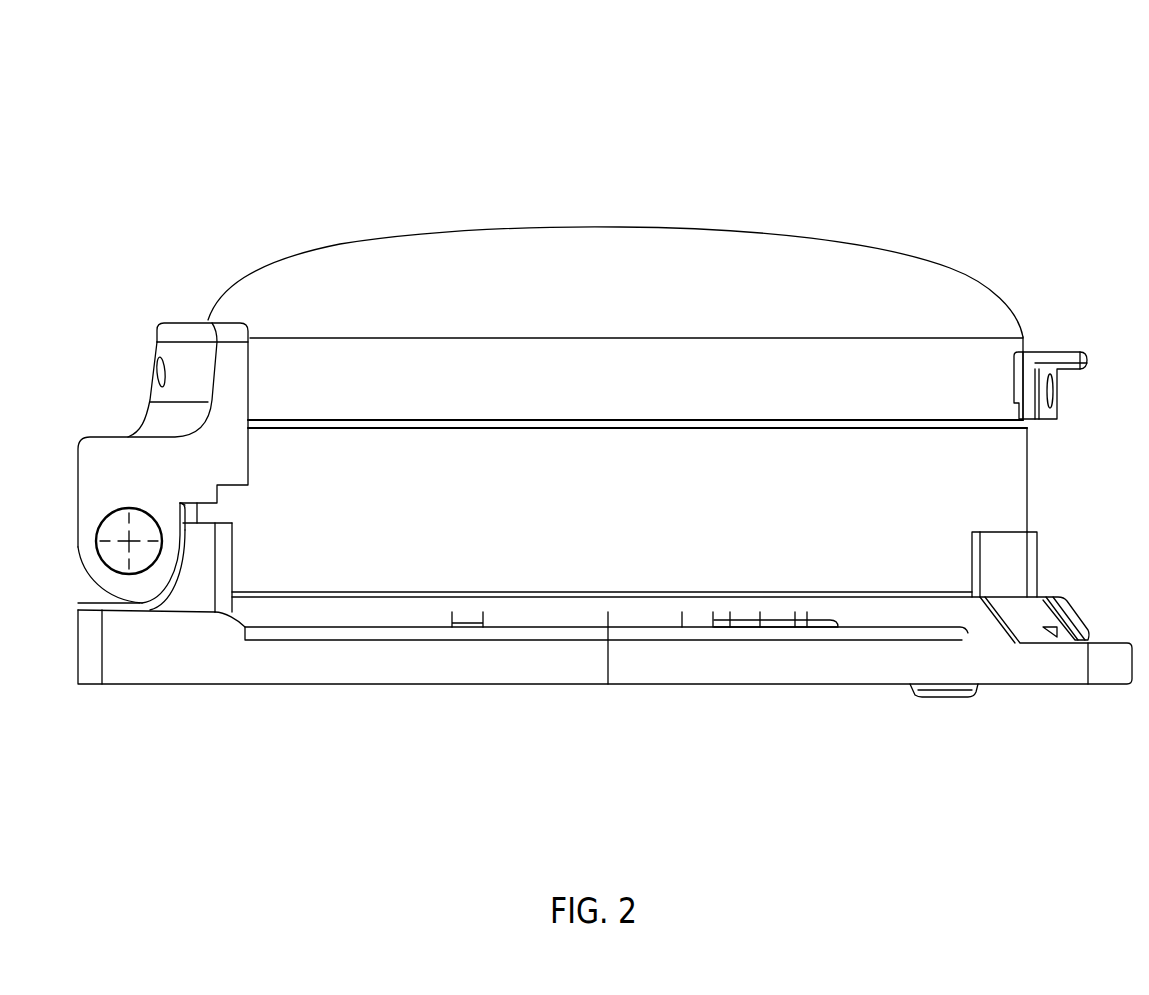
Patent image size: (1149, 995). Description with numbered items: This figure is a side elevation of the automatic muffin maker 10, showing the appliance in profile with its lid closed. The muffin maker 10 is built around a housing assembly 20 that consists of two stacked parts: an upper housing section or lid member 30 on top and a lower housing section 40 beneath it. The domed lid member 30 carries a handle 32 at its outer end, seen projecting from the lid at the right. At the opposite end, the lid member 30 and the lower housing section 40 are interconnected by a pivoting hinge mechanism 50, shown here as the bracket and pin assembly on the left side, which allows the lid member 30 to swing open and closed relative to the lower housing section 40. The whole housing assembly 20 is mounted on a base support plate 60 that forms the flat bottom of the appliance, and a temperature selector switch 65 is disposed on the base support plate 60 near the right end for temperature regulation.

The automatic muffin maker 10 is at (588, 118).
The housing assembly 20 is at (365, 228).
The lid member 30 is at (626, 303).
The handle 32 is at (1056, 352).
The lower housing section 40 is at (633, 506).
The pivoting hinge mechanism 50 is at (127, 395).
The base support plate 60 is at (660, 710).
The temperature selector switch 65 is at (1066, 606).